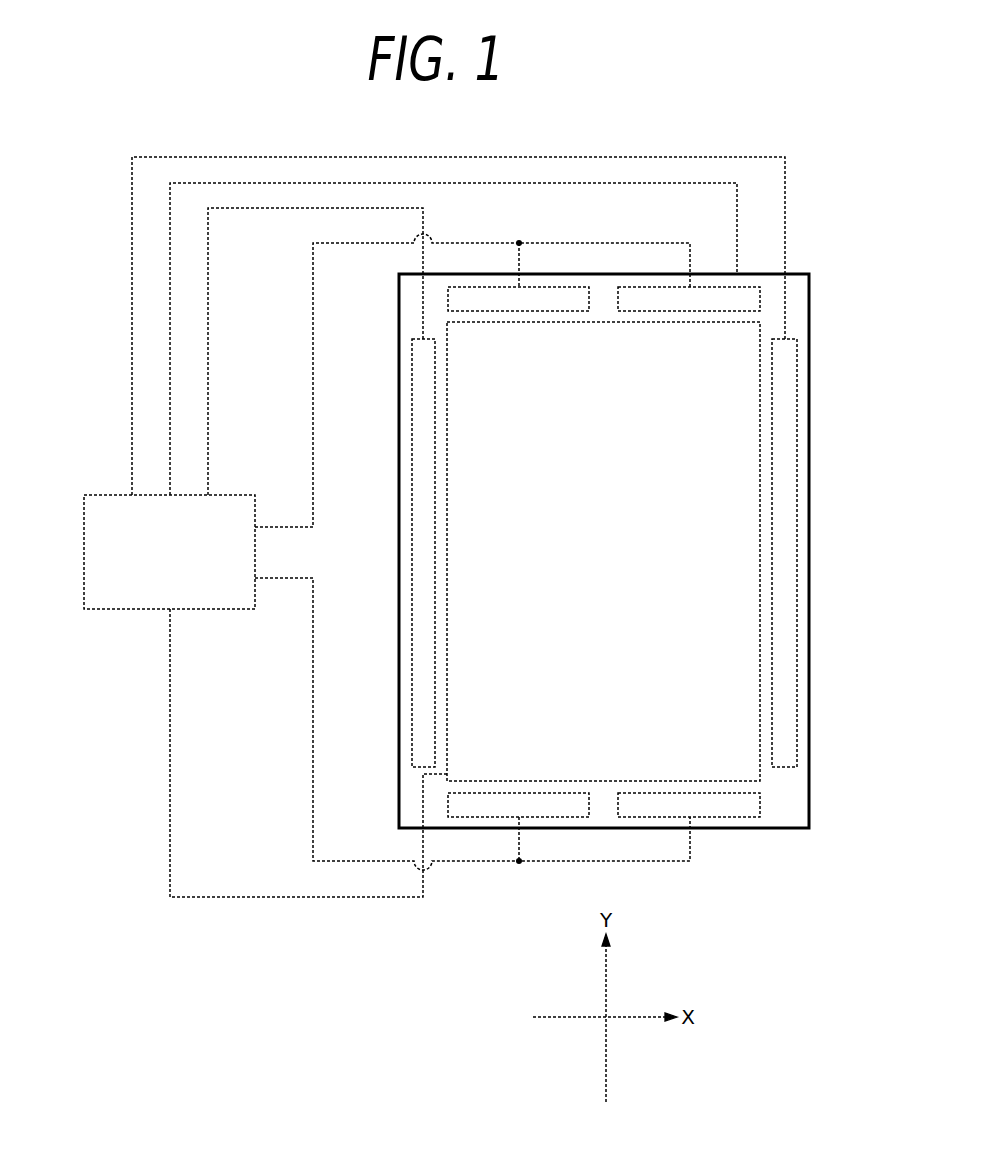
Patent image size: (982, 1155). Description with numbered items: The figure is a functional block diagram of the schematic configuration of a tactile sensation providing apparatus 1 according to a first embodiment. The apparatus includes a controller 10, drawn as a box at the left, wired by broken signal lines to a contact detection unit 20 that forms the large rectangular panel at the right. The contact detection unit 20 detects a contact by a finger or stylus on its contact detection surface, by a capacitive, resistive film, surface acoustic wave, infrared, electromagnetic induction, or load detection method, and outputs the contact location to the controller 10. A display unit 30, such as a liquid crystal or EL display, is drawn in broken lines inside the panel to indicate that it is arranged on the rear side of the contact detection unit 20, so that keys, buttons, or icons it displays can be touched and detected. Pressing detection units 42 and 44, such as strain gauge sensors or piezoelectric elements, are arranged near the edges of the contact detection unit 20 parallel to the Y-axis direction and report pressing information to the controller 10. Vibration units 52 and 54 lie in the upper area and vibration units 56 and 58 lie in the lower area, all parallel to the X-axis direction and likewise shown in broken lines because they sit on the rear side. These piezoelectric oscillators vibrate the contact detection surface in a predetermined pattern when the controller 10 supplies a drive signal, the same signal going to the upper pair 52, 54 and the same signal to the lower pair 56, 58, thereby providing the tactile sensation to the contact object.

The tactile sensation providing apparatus 1 is at (747, 857).
The controller 10 is at (84, 554).
The contact detection unit 20 is at (399, 300).
The display unit 30 is at (760, 775).
The pressing detection unit 42 is at (797, 538).
The pressing detection unit 44 is at (412, 540).
The vibration unit 52 is at (519, 312).
The vibration unit 54 is at (690, 312).
The vibration unit 56 is at (519, 790).
The vibration unit 58 is at (690, 790).